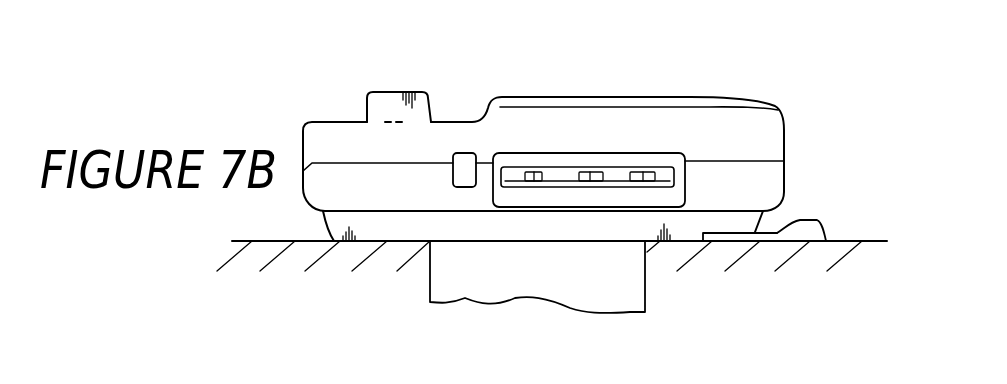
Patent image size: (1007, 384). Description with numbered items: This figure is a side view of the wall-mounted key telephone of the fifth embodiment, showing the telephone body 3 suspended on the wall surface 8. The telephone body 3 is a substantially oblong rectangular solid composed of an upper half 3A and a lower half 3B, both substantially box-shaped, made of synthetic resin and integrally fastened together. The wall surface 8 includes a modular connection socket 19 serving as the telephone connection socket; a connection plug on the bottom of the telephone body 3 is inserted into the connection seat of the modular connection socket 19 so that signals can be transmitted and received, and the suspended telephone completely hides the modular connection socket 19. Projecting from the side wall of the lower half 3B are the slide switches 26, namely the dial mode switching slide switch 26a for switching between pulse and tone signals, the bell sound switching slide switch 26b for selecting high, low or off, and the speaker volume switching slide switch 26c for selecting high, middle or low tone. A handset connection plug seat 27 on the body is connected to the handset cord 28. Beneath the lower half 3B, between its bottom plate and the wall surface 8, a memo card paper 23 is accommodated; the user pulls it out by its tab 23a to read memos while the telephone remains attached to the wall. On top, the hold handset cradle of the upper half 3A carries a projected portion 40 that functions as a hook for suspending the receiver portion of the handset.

The telephone body 3 is at (611, 138).
The upper half 3A is at (755, 128).
The lower half 3B is at (768, 187).
The wall surface 8 is at (300, 253).
The modular connection socket 19 is at (602, 295).
The memo card paper 23 is at (783, 260).
The tab 23a is at (808, 221).
The slide switches 26 is at (605, 103).
The dial mode switching slide switch 26a is at (533, 172).
The bell sound switching slide switch 26b is at (591, 172).
The speaker volume switching slide switch 26c is at (661, 115).
The handset connection plug seat 27 is at (464, 162).
The handset cord 28 is at (451, 6).
The projected portion 40 is at (388, 102).